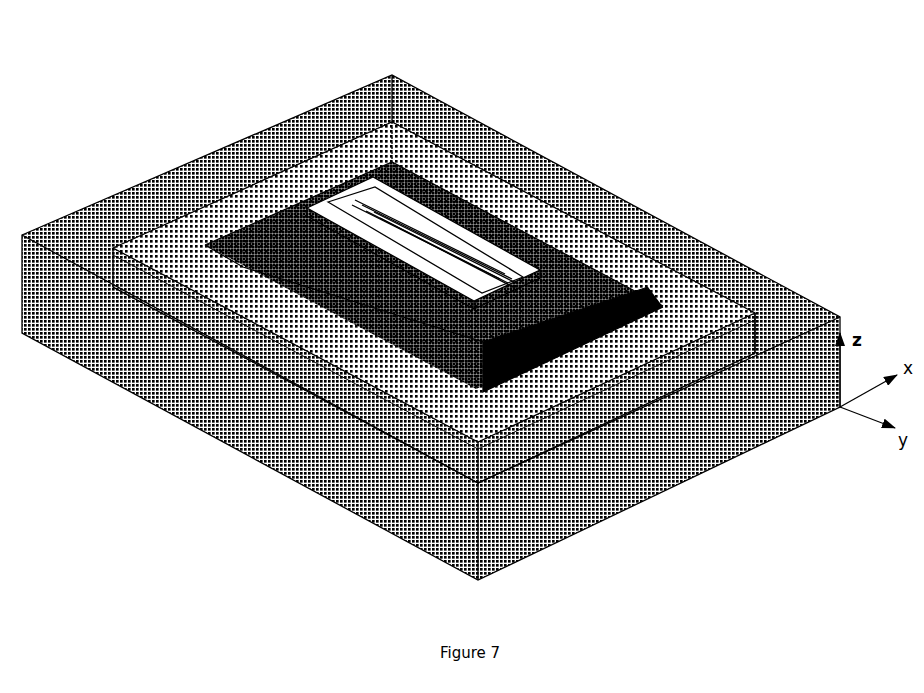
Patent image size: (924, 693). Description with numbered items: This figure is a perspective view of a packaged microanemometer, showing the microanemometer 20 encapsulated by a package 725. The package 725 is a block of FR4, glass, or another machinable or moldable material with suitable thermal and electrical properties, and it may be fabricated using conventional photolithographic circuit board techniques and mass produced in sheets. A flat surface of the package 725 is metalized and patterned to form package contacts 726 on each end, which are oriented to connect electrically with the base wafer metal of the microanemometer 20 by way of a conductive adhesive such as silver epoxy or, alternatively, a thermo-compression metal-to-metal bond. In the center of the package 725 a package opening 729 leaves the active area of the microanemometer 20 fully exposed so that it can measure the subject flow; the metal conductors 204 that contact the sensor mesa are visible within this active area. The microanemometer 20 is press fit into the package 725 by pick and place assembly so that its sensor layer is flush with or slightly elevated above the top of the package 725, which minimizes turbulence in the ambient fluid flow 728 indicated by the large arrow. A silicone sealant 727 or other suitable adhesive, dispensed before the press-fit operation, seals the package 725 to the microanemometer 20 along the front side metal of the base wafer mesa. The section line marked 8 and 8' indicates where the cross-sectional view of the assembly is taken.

The ambient fluid flow 728 is at (178, 386).
The package 725 is at (672, 246).
The package contacts 726 is at (710, 304).
The package opening 729 is at (541, 262).
The microanemometer 20 is at (546, 211).
The metal conductors 204 is at (457, 268).
The silicone sealant 727 is at (281, 262).
The section line 8- 8 is at (210, 159).
The section line 8-8 8' is at (720, 423).